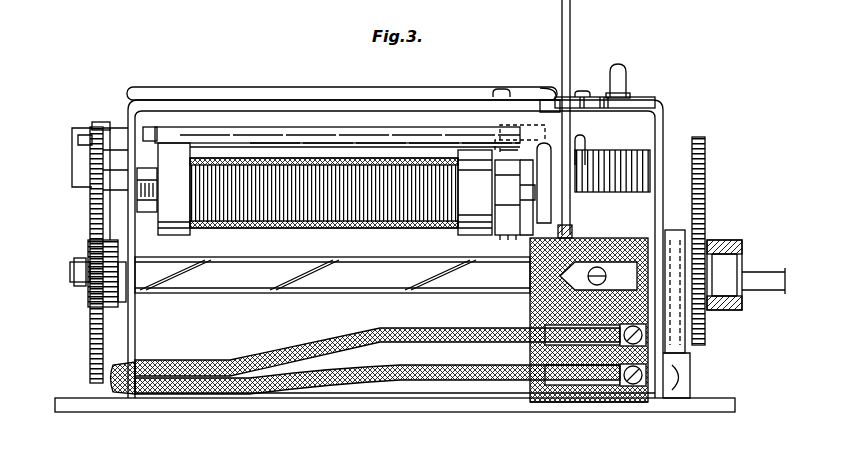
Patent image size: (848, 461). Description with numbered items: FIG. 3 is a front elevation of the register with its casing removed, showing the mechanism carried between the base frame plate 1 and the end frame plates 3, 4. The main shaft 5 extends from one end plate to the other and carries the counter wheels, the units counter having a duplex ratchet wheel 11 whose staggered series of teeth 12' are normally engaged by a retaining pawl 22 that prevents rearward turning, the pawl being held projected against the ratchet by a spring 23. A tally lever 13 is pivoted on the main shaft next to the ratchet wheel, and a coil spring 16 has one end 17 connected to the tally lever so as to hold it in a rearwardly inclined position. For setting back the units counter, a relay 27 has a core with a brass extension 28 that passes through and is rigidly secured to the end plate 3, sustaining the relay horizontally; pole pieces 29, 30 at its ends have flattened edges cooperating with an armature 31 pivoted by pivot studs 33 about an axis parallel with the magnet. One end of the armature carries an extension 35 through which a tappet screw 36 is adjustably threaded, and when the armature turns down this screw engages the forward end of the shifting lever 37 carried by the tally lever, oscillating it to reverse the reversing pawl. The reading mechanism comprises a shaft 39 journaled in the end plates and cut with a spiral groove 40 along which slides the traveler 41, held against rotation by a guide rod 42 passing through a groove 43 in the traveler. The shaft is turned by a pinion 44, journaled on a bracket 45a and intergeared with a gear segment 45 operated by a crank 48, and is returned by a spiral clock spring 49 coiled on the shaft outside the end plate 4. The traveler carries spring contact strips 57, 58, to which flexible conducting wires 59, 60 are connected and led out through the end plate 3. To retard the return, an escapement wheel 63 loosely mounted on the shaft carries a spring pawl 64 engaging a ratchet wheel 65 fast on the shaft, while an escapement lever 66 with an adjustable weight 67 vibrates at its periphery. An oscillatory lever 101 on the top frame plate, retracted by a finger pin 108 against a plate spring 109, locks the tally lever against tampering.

The base frame plate 1 is at (75, 398).
The end frame plate 3 is at (135, 108).
The end frame plate 4 is at (665, 132).
The main shaft 5 is at (210, 453).
The duplex ratchet wheel 11 is at (520, 205).
The series of teeth 12' is at (521, 213).
The tally lever 13 is at (571, 58).
The coil spring 16 is at (608, 150).
The end of coil spring 17 is at (580, 148).
The retaining pawl 22 is at (573, 233).
The spring 23 is at (508, 180).
The relay 27 is at (185, 142).
The brass extension 28 is at (145, 190).
The pole piece 29 is at (128, 160).
The pole piece 30 is at (523, 232).
The armature 31 is at (250, 138).
The pivot stud 33 is at (150, 128).
The extension 35 is at (545, 118).
The tappet screw 36 is at (556, 96).
The shifting lever 37 is at (552, 200).
The shaft 39 is at (340, 294).
The spiral groove 40 is at (455, 265).
The traveler 41 is at (530, 312).
The guide rod 42 is at (170, 415).
The groove 43 is at (519, 405).
The pinion 44 is at (735, 300).
The gear segment 45 is at (706, 206).
The bracket 45a is at (690, 340).
The crank 48 is at (742, 250).
The spiral clock spring 49 is at (688, 370).
The spring contact strip 57 is at (596, 308).
The spring contact strip 58 is at (596, 346).
The flexible conducting wire 59 is at (442, 333).
The flexible conducting wire 60 is at (456, 368).
The escapement wheel 63 is at (90, 331).
The spring pawl 64 is at (117, 252).
The ratchet wheel 65 is at (126, 283).
The escapement lever 66 is at (105, 130).
The adjustable weight 67 is at (72, 155).
The oscillatory lever 101 is at (655, 105).
The finger pin 108 is at (627, 73).
The plate spring 109 is at (503, 95).